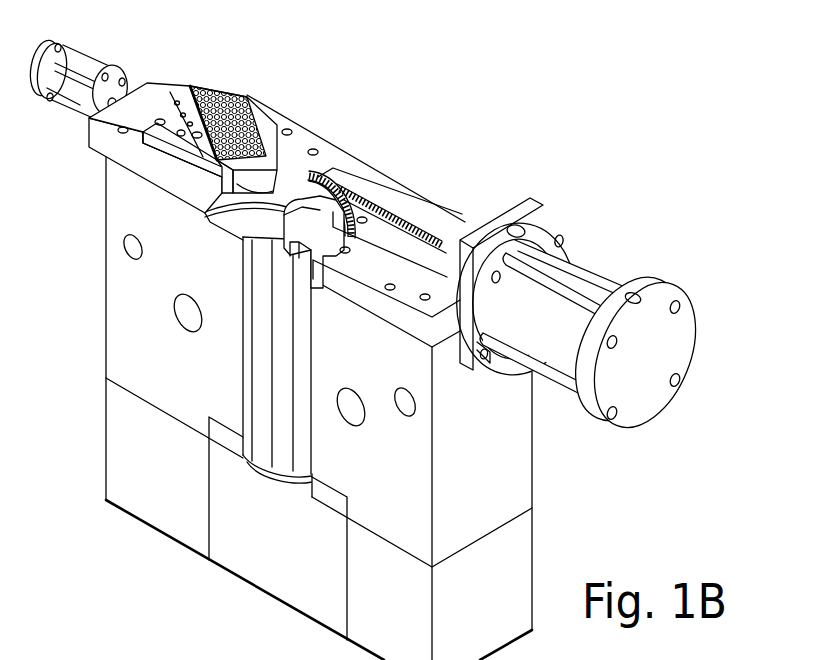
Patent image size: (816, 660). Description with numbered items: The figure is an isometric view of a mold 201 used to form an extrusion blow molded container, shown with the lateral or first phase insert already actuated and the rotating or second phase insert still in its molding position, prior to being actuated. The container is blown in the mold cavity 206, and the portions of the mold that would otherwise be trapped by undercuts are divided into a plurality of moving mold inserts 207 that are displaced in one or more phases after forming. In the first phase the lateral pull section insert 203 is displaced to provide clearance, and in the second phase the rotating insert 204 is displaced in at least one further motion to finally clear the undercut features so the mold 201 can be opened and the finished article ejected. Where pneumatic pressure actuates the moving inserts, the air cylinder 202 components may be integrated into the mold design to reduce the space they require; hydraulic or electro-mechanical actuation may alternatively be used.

The mold 201 is at (690, 288).
The air cylinder 202 is at (78, 75).
The lateral pull section insert 203 is at (223, 105).
The rotating insert 204 is at (315, 228).
The mold cavity 206 is at (260, 428).
The moving mold insert 207 is at (288, 218).